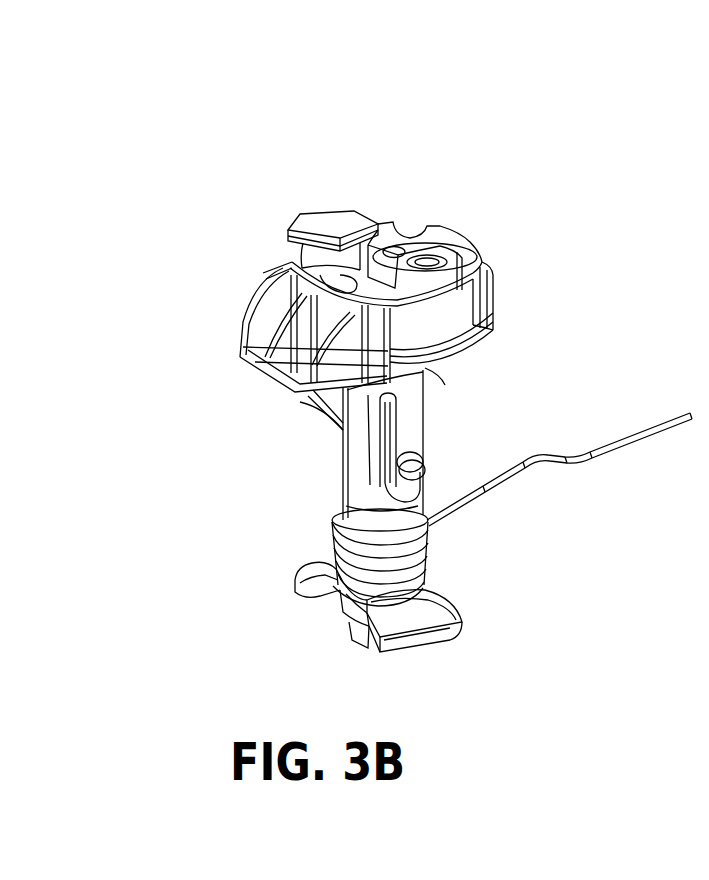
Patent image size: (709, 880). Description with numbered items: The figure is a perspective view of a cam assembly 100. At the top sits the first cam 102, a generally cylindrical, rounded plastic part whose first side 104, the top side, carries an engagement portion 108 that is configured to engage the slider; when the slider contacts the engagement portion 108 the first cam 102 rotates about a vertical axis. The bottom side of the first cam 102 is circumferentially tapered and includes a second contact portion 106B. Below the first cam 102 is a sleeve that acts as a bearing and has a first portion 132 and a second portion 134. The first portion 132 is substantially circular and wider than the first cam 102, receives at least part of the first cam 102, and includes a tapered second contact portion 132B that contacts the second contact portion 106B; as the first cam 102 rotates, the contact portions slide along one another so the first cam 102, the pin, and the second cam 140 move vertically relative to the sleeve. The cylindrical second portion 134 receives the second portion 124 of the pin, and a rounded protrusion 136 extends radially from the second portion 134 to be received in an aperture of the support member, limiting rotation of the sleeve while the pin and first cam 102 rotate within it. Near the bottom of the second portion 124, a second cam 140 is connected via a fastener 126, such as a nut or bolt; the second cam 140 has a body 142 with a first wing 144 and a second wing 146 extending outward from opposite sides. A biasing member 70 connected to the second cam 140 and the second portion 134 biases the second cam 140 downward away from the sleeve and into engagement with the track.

The cam assembly 100 is at (325, 160).
The first cam 102 is at (291, 208).
The first side 104 is at (396, 204).
The engagement portion 108 is at (448, 253).
The second contact portion 106B is at (480, 337).
The second contact portion 132B is at (448, 340).
The first portion 132 is at (238, 380).
The second portion 134 is at (320, 441).
The second portion 124 is at (390, 487).
The protrusion 136 is at (427, 467).
The biasing member 70 is at (422, 547).
The second cam 140 is at (458, 592).
The second wing 146 is at (310, 563).
The body 142 is at (335, 608).
The first wing 144 is at (427, 640).
The fastener 126 is at (358, 645).